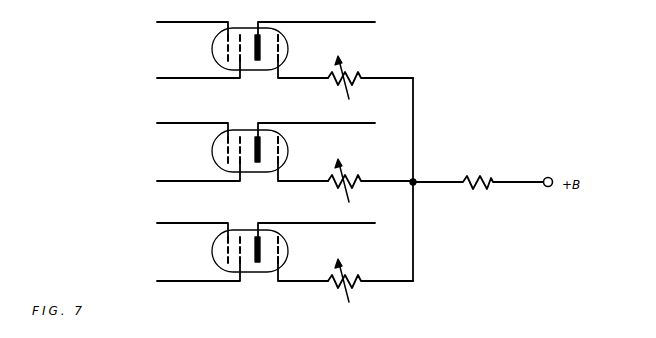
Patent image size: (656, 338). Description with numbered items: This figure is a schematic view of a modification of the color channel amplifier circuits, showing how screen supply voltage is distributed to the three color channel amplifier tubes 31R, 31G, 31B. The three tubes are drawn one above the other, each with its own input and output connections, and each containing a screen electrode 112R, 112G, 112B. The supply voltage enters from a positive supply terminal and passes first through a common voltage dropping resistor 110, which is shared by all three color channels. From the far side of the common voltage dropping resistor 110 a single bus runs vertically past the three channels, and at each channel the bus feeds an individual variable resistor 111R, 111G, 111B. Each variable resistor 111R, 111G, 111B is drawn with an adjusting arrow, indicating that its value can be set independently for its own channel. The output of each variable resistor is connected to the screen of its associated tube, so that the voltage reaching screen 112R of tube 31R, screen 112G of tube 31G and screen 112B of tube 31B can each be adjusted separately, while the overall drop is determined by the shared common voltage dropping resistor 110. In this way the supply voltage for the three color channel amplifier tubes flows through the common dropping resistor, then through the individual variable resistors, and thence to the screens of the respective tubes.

The color channel amplifier tube 31R is at (268, 39).
The color channel amplifier tube 31G is at (268, 141).
The color channel amplifier tube 31B is at (268, 241).
The screen 112R is at (283, 52).
The screen 112G is at (283, 156).
The screen 112B is at (283, 256).
The variable resistor 111R is at (355, 72).
The variable resistor 111G is at (355, 175).
The variable resistor 111B is at (355, 275).
The common voltage dropping resistor 110 is at (487, 176).